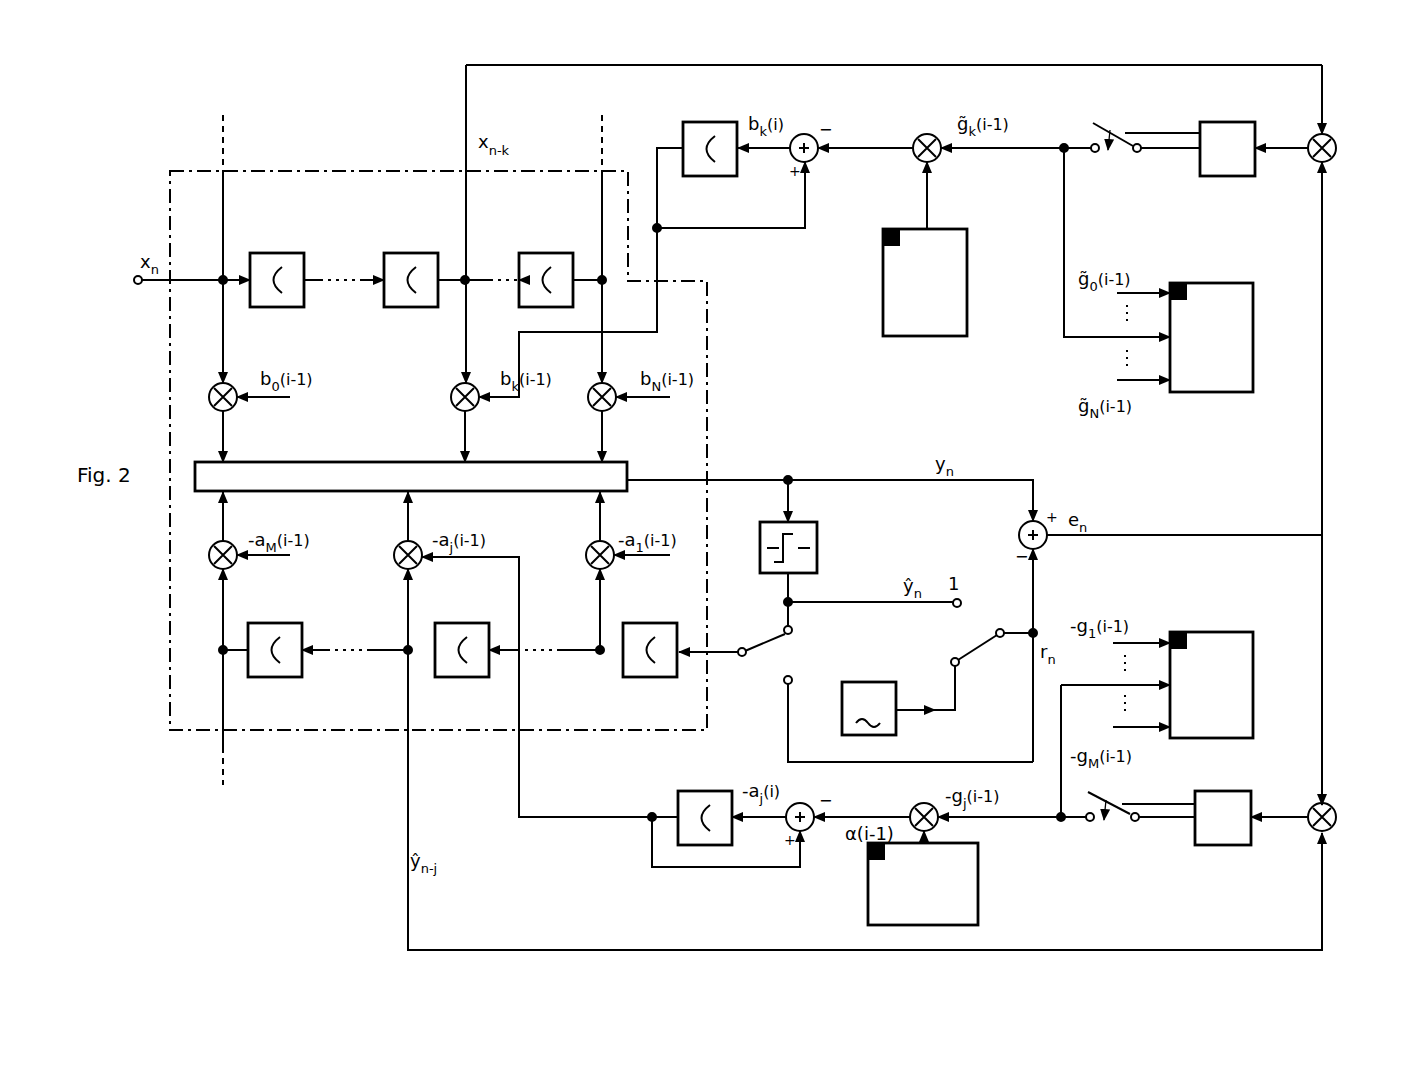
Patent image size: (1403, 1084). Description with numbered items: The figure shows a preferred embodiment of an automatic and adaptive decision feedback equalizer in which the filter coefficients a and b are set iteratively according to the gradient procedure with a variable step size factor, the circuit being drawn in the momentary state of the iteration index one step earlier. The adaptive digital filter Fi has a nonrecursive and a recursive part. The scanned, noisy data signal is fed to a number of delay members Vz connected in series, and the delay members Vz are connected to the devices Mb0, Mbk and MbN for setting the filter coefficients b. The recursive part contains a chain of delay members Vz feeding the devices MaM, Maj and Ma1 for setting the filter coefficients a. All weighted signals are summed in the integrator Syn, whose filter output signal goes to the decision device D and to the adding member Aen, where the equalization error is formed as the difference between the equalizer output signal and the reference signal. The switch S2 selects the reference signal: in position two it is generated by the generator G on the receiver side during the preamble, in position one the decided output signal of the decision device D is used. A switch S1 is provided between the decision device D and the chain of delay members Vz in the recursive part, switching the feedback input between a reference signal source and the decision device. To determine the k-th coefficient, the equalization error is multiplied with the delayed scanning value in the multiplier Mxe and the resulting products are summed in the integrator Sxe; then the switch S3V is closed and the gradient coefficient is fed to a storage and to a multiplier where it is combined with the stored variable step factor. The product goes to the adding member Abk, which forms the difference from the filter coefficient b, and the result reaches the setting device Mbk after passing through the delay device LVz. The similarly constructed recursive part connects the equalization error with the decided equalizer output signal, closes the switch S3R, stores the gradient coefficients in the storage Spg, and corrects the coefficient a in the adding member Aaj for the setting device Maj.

The delay member Vz is at (300, 258).
The delay device LVz is at (660, 118).
The adding member Abk is at (813, 137).
The integrator Sxe is at (1210, 176).
The multiplier Mxe is at (1342, 148).
The switch S3V is at (1134, 162).
The device for setting filter coefficient b_0 Mb0 is at (205, 394).
The device for setting filter coefficient b_k Mbk is at (447, 394).
The device for setting filter coefficient b_N MbN is at (584, 394).
The integrator Syn is at (482, 492).
The adaptive digital filter Fi is at (690, 428).
The decision device D is at (817, 540).
The device for setting filter coefficient a_M MaM is at (208, 560).
The device for setting filter coefficient a_j Maj is at (393, 560).
The device for setting filter coefficient a_1 Ma1 is at (585, 560).
The switch S1 is at (764, 653).
The switch S2 is at (985, 639).
The generator G is at (893, 735).
The adding member Aen is at (1044, 545).
The storage Spg is at (1253, 672).
The adding member Aaj is at (808, 805).
The switch S3R is at (1130, 831).